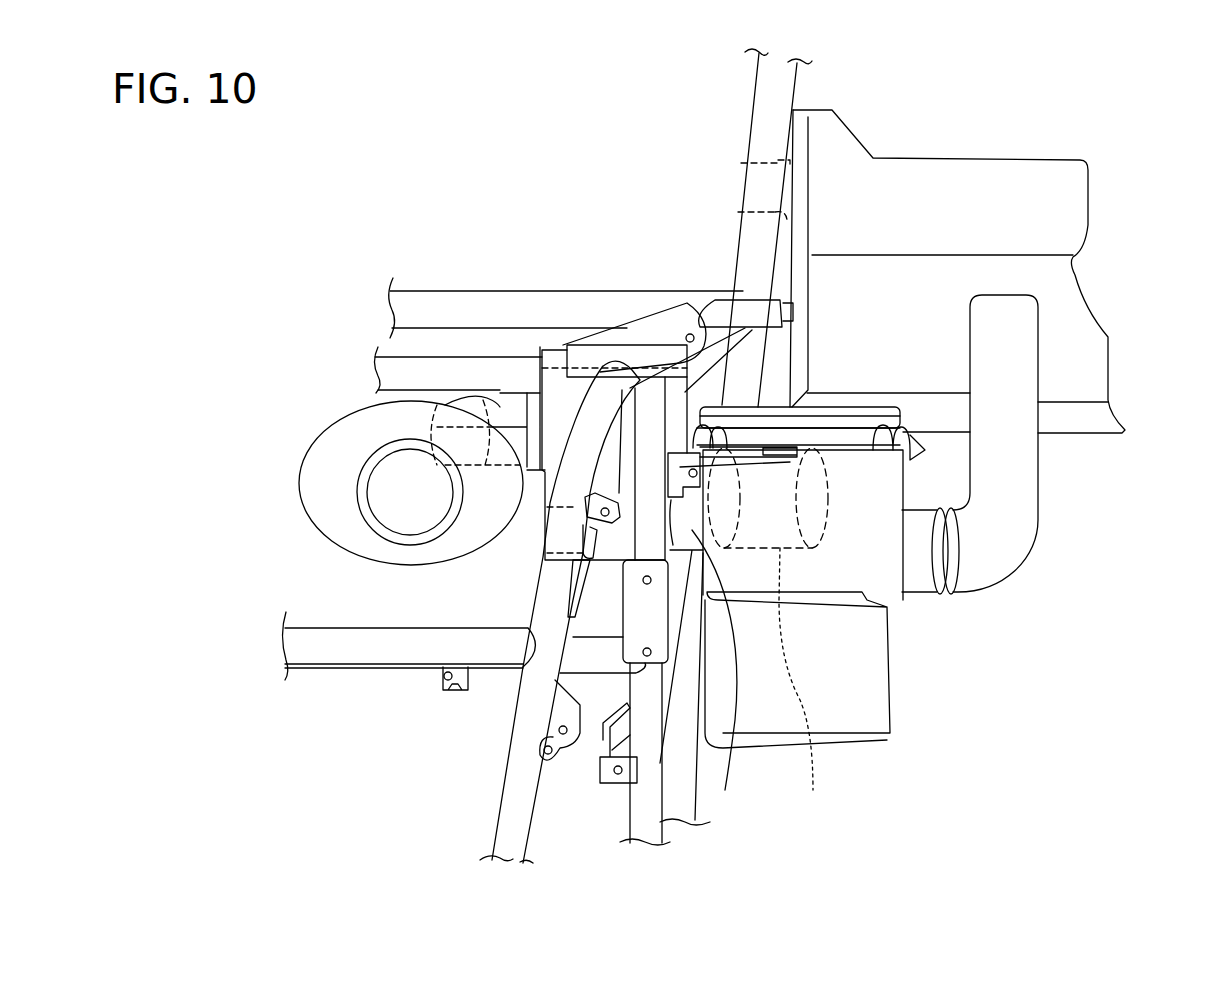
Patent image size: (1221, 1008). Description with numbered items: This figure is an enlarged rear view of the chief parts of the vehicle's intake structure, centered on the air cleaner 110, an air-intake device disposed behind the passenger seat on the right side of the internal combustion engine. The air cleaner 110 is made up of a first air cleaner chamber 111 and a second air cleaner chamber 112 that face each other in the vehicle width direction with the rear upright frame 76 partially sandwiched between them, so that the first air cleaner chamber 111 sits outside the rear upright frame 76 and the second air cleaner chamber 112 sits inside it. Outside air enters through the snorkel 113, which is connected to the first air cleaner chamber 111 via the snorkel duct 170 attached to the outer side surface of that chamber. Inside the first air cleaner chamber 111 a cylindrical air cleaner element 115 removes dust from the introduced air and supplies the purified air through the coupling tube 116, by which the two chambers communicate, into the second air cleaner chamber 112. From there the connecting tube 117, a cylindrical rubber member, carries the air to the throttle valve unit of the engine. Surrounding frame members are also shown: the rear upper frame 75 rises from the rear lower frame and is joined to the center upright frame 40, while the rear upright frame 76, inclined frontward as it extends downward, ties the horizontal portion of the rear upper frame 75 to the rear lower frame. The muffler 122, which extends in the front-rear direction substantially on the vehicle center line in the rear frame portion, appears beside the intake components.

The center upright frame 40 is at (776, 88).
The snorkel 113 is at (1048, 205).
The snorkel duct 170 is at (1003, 353).
The air cleaner 110 is at (1047, 517).
The first air cleaner chamber 111 is at (858, 675).
The air cleaner element 115 is at (768, 635).
The second air cleaner chamber 112 is at (557, 415).
The connecting tube 117 is at (500, 405).
The muffler 122 is at (313, 481).
The coupling tube 116 is at (681, 598).
The rear upper frame 75 is at (520, 790).
The rear upright frame 76 is at (643, 807).